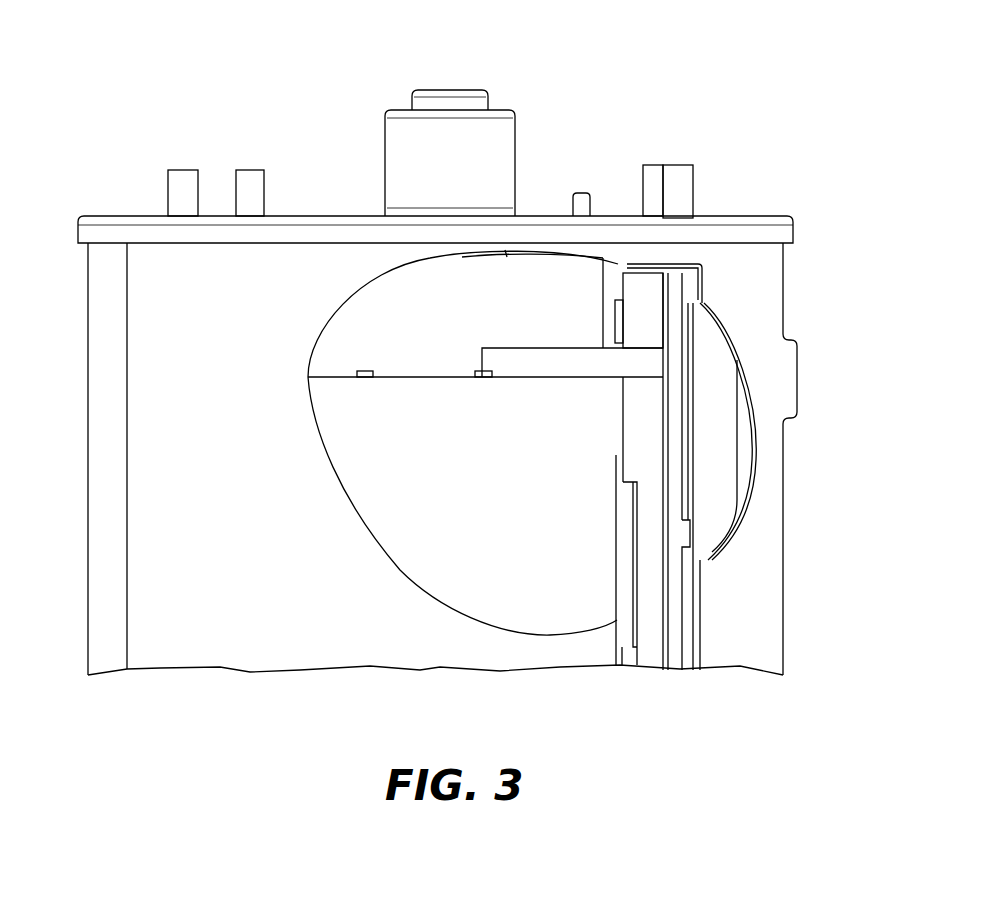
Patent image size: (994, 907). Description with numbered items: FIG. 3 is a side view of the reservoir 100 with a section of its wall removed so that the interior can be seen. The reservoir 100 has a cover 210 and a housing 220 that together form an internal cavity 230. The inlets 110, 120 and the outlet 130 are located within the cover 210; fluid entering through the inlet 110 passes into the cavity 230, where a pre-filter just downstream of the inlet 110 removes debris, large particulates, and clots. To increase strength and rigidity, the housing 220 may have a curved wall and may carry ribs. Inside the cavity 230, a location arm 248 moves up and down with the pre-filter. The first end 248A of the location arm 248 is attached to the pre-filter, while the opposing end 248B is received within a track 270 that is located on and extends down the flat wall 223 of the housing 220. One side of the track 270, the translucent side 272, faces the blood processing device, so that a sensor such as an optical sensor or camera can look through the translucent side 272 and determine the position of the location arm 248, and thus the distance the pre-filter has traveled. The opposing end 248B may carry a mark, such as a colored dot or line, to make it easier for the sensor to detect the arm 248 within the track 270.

The reservoir 100 is at (243, 76).
The inlet 110 is at (455, 90).
The inlet 120 is at (243, 188).
The outlet 130 is at (685, 168).
The cover 210 is at (748, 213).
The housing 220 is at (88, 470).
The wall 223 is at (180, 655).
The internal cavity 230 is at (542, 519).
The location arm 248 is at (540, 365).
The first end 248A is at (480, 378).
The opposing end 248B is at (655, 360).
The track 270 is at (690, 580).
The translucent side 272 is at (652, 612).